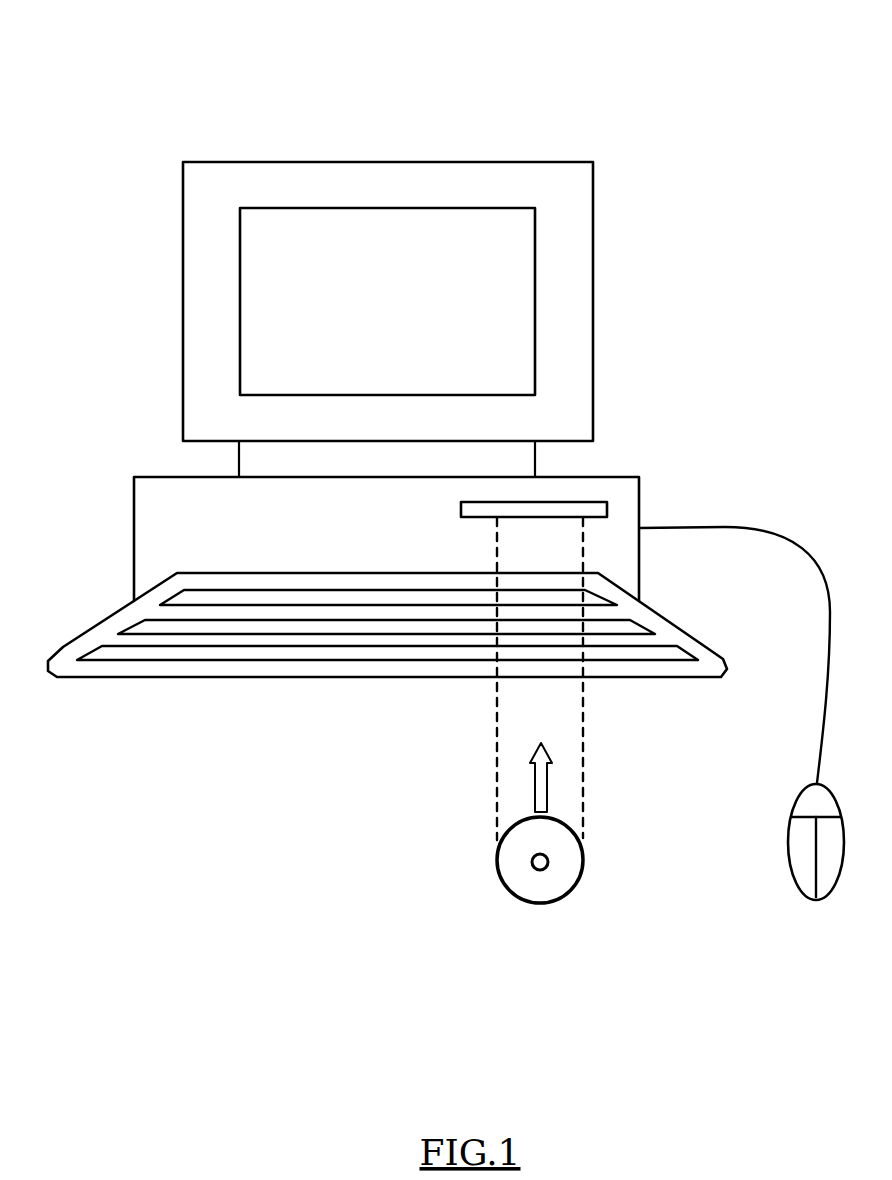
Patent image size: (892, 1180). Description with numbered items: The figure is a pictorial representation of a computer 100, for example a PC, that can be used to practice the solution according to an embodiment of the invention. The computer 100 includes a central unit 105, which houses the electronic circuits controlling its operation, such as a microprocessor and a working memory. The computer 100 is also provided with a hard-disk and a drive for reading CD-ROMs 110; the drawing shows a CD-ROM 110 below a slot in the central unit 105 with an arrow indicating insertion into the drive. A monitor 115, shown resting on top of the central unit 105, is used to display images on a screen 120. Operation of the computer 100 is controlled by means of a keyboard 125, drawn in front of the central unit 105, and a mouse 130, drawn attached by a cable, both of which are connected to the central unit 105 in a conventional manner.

The computer 100 is at (446, 464).
The central unit 105 is at (345, 503).
The CD-ROM 110 is at (493, 710).
The monitor 115 is at (384, 283).
The screen 120 is at (511, 258).
The keyboard 125 is at (387, 652).
The mouse 130 is at (741, 713).